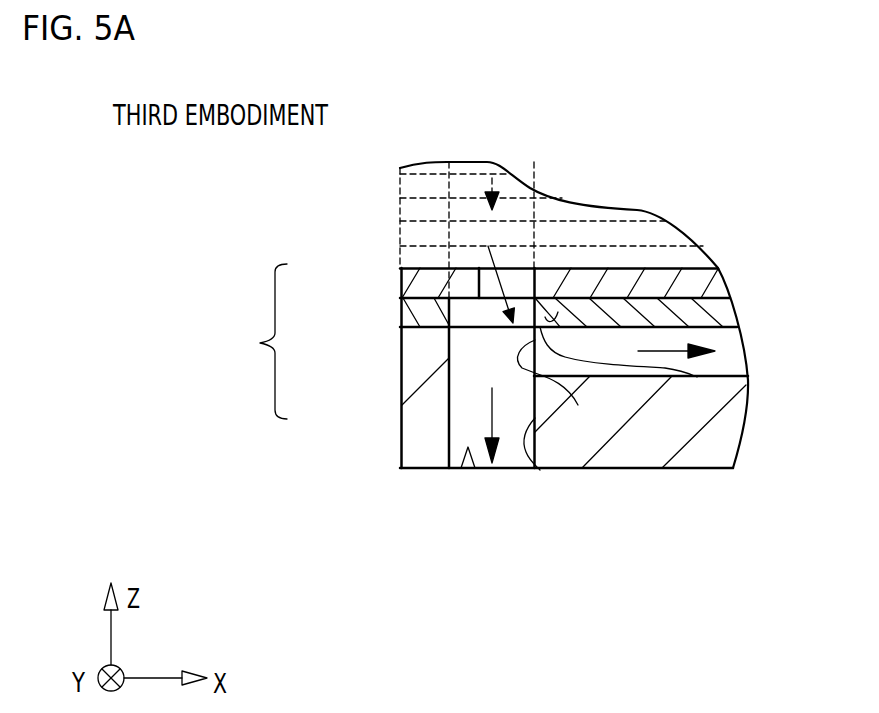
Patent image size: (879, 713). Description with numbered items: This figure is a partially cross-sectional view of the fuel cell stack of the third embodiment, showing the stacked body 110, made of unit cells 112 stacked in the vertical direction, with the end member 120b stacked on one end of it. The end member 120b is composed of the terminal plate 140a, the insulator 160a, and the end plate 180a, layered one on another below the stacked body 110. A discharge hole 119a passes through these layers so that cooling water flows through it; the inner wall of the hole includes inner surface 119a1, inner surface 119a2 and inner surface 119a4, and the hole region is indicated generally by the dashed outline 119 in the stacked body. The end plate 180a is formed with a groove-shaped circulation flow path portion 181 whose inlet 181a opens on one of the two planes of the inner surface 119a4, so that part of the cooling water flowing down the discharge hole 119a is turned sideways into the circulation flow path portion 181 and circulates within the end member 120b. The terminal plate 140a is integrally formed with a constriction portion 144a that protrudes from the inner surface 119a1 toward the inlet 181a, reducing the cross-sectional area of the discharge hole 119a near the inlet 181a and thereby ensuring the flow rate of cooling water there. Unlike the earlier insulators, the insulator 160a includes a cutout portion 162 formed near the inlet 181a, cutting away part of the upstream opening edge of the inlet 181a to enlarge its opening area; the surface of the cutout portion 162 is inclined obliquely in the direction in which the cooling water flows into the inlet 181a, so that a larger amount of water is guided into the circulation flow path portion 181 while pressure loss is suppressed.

The stacked body 110 is at (582, 198).
The unit cell 112 is at (610, 260).
The flow path (dashed region) 119 is at (458, 183).
The discharge hole 119a is at (466, 470).
The inner surface 119a1 is at (435, 453).
The inner surface 119a2 is at (507, 413).
The inner surface 119a4 is at (540, 470).
The end member 120b is at (247, 341).
The terminal plate 140a is at (422, 290).
The constriction portion 144a is at (467, 287).
The insulator 160a is at (430, 316).
The cutout portion 162 is at (697, 377).
The end plate 180a is at (402, 405).
The circulation flow path portion 181 is at (710, 311).
The inlet 181a is at (578, 405).